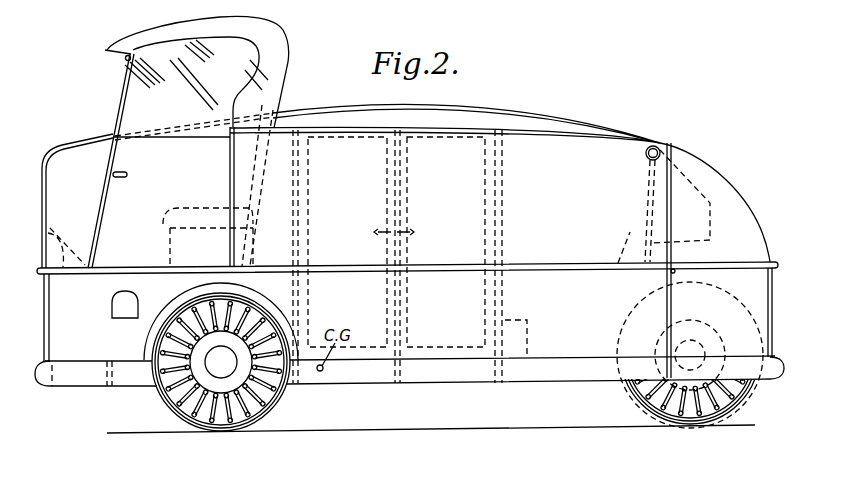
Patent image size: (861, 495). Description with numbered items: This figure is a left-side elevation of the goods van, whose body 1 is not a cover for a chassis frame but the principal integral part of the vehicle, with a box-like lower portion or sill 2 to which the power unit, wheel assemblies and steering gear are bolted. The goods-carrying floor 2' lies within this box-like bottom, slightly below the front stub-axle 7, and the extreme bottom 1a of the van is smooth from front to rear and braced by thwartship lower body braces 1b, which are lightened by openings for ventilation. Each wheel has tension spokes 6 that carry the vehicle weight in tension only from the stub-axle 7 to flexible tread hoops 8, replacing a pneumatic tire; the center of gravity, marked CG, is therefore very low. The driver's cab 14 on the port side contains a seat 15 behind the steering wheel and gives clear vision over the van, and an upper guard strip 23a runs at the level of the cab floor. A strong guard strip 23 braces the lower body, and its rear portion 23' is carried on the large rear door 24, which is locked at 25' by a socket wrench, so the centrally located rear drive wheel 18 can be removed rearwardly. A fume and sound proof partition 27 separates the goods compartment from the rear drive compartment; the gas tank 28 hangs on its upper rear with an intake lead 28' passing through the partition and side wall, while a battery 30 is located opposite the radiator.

The body 1 is at (343, 165).
The extreme bottom of the van 1a is at (437, 386).
The lower body braces 1b is at (107, 386).
The box-like lower portion or sill 2 is at (462, 396).
The floor 2' is at (591, 347).
The tension spokes 6 is at (186, 314).
The stub-axle or steering spindle 7 is at (214, 267).
The flexible tread hoops 8 is at (233, 432).
The driver's cab 14 is at (140, 100).
The seat 15 is at (195, 208).
The drive wheel 18 is at (745, 304).
The guard strip 23 is at (194, 390).
The upper guard strip 23a is at (45, 266).
The bumper portion of the guard strip 23' is at (784, 351).
The rear door 24 is at (768, 298).
The lock 25' is at (697, 277).
The partition 27 is at (504, 299).
The gas tank 28 is at (707, 260).
The intake lead 28' is at (659, 137).
The battery 30 is at (528, 331).